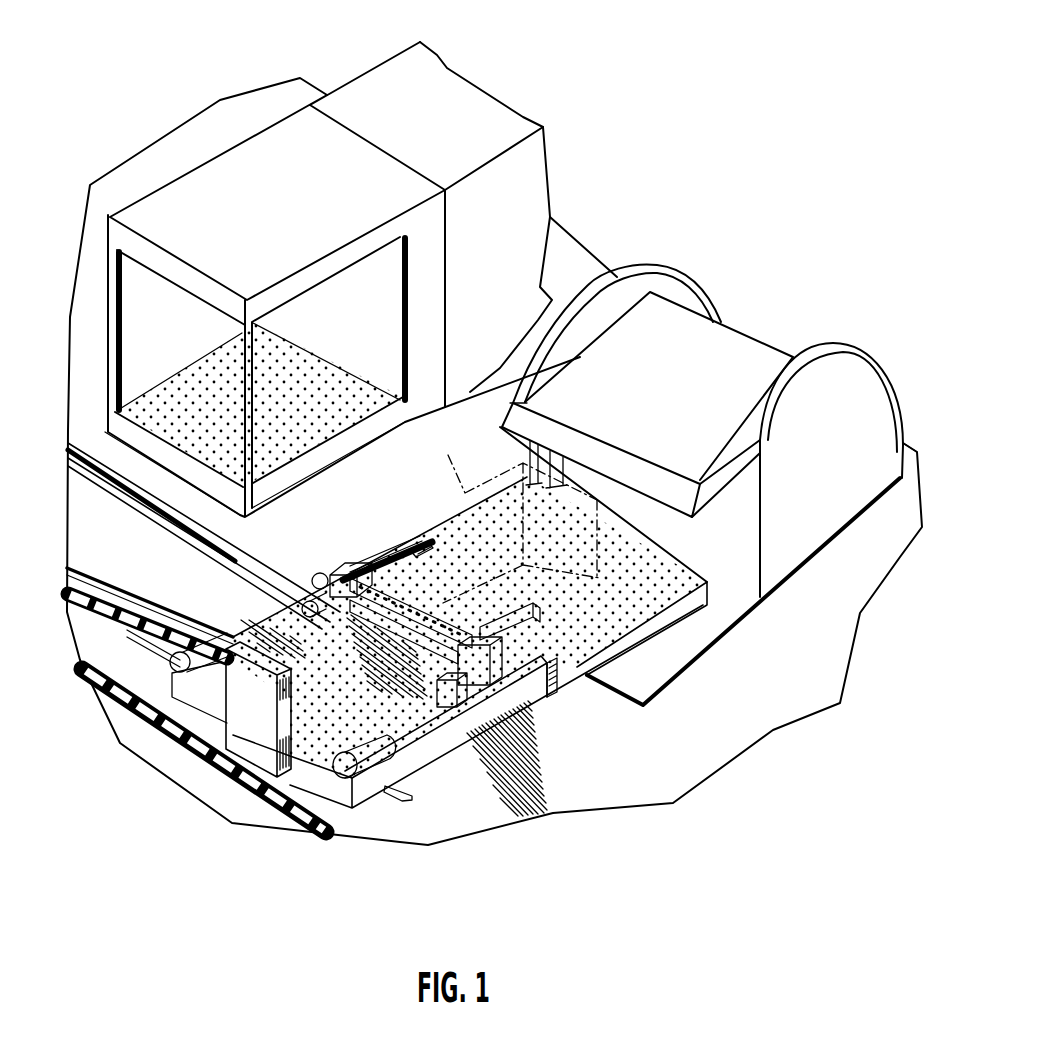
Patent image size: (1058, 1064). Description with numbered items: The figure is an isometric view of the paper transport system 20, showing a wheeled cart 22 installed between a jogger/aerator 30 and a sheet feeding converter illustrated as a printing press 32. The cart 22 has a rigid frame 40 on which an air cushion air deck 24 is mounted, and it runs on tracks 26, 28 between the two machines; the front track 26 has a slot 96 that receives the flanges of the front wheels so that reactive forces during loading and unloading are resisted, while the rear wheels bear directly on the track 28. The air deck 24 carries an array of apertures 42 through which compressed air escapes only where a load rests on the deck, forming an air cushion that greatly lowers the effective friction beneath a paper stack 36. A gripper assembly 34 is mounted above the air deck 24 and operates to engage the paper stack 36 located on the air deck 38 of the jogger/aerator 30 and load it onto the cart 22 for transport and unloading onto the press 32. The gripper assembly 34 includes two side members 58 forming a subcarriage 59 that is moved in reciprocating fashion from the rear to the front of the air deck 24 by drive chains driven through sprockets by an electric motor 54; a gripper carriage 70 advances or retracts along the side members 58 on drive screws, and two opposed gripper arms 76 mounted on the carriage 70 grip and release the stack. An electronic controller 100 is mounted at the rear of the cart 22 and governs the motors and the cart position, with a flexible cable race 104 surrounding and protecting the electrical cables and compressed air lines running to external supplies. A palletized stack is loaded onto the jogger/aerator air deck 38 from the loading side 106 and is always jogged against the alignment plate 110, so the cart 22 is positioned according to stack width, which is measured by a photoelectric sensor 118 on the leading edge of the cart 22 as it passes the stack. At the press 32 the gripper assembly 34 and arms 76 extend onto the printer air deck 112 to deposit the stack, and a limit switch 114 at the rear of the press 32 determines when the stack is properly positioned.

The paper transport system 20 is at (84, 678).
The wheeled cart 22 is at (537, 708).
The air cushion air deck 24 is at (335, 733).
The track 26 is at (264, 568).
The track 28 is at (126, 631).
The jogger/aerator 30 is at (754, 318).
The printing press 32 is at (312, 67).
The gripper assembly 34 is at (361, 556).
The paper stack 36 is at (475, 540).
The air deck of the jogger/aerator 38 is at (607, 643).
The rigid frame 40 is at (430, 762).
The apertures 42 is at (303, 643).
The electric motor 54 is at (176, 664).
The gripper assembly side member 58 is at (308, 603).
The gripper assembly subcarriage 59 is at (528, 647).
The gripper carriage 70 is at (428, 657).
The gripper arms 76 is at (416, 541).
The slot 96 is at (245, 548).
The electronic controller 100 is at (274, 716).
The flexible cable race 104 is at (129, 606).
The loading side 106 is at (670, 633).
The alignment plate 110 is at (529, 455).
The printer air deck 112 is at (360, 421).
The limit switch 114 is at (334, 345).
The photoelectric sensor 118 is at (553, 667).